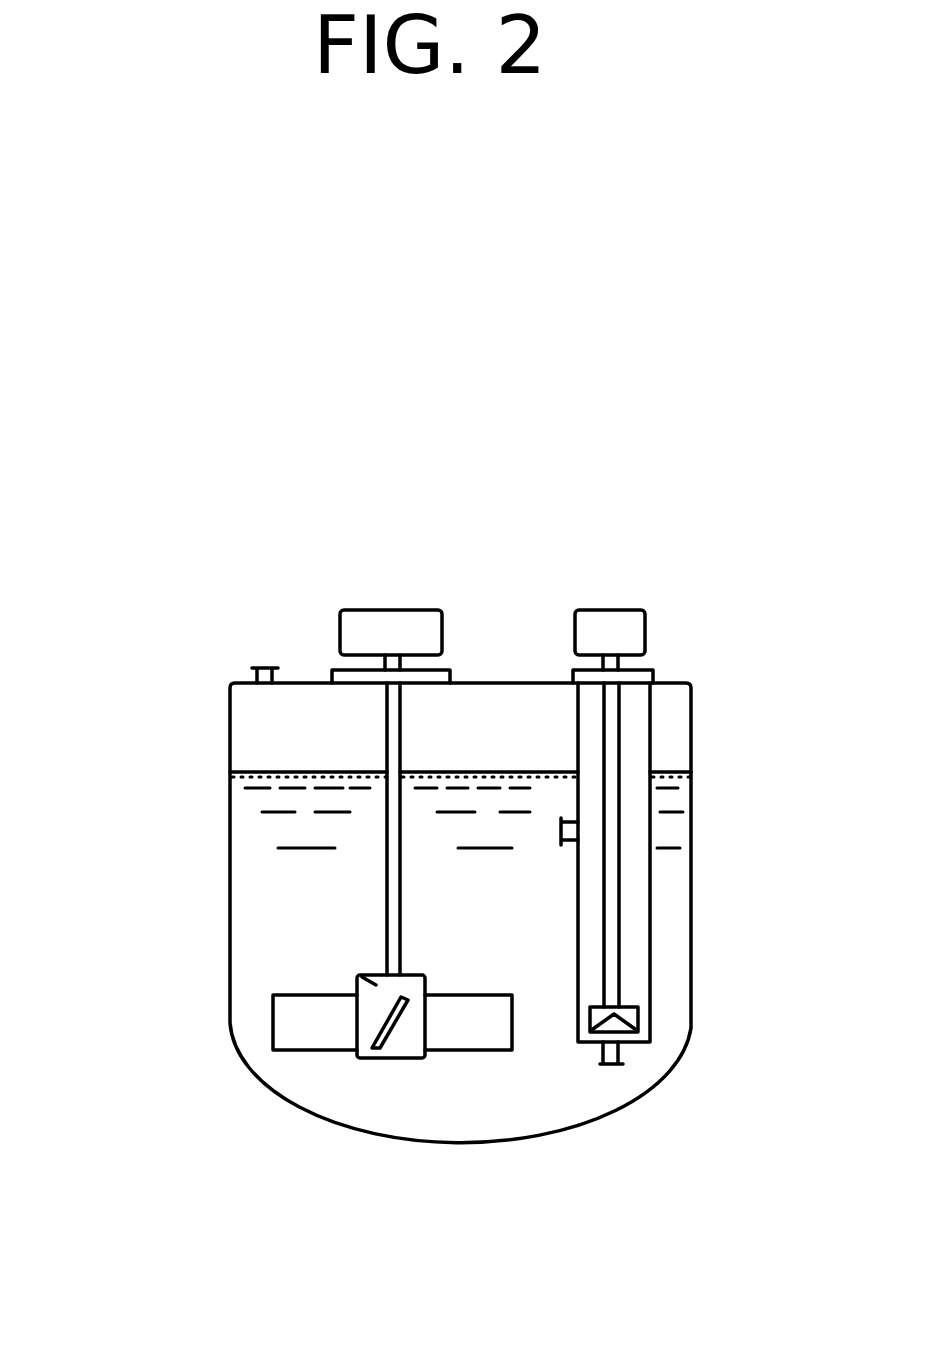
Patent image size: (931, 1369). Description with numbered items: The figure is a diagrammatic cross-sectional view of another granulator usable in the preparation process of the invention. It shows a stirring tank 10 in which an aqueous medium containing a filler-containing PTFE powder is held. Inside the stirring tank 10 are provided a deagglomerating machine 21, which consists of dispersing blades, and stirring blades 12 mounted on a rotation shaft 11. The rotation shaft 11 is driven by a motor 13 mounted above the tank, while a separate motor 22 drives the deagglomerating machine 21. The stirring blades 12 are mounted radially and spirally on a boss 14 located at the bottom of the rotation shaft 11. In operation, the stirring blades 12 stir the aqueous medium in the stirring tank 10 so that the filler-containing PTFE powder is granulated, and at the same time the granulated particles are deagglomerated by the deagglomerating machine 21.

The stirring tank 10 is at (691, 735).
The rotation shaft 11 is at (392, 733).
The stirring blades 12 is at (310, 1040).
The motor 13 is at (425, 633).
The boss 14 is at (357, 975).
The deagglomerating machine 21 is at (638, 945).
The motor 22 is at (633, 627).